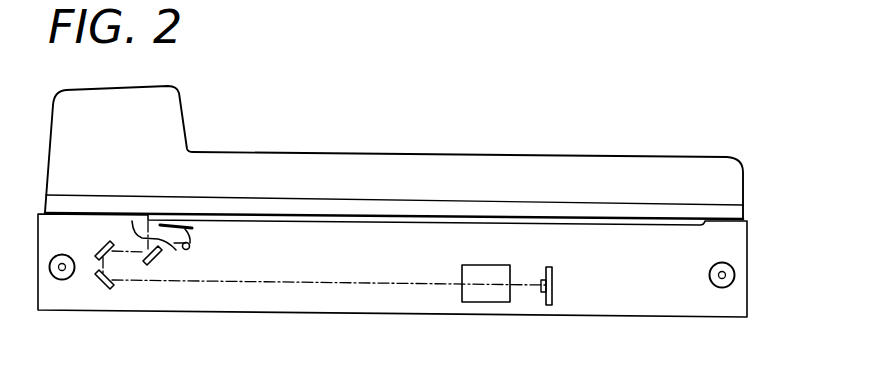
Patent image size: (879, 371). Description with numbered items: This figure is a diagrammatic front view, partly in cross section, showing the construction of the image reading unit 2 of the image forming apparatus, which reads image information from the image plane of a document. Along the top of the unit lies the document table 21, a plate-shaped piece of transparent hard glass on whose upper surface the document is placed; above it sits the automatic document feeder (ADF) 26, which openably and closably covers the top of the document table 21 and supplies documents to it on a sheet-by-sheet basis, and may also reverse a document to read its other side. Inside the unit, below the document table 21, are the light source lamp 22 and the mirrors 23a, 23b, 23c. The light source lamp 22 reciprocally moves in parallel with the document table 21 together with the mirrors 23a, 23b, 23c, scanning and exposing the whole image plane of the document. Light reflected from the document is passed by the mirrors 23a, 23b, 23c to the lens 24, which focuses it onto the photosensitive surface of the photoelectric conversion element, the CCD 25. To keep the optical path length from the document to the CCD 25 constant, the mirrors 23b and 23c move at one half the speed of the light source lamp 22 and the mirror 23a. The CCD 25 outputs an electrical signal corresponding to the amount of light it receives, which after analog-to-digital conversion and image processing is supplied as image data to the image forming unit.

The image reading unit 2 is at (733, 113).
The document table 21 is at (648, 227).
The light source lamp 22 is at (194, 243).
The mirror 23a is at (154, 259).
The mirror 23b is at (98, 250).
The mirror 23c is at (99, 288).
The lens 24 is at (462, 265).
The photoelectric conversion element (CCD) 25 is at (552, 292).
The automatic document feeder (ADF) 26 is at (318, 153).